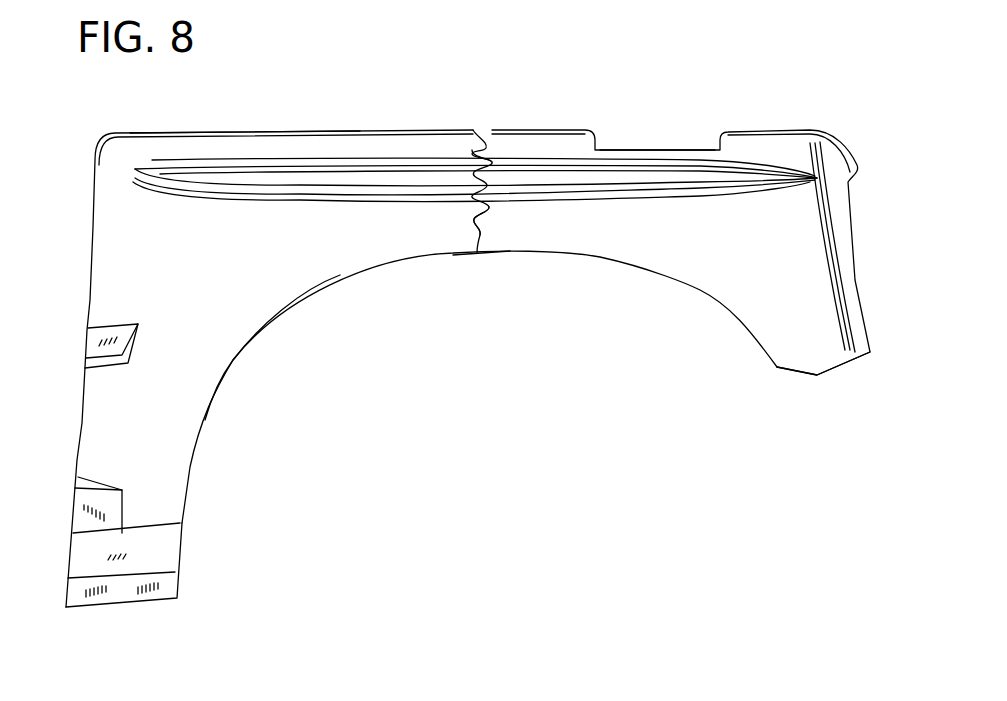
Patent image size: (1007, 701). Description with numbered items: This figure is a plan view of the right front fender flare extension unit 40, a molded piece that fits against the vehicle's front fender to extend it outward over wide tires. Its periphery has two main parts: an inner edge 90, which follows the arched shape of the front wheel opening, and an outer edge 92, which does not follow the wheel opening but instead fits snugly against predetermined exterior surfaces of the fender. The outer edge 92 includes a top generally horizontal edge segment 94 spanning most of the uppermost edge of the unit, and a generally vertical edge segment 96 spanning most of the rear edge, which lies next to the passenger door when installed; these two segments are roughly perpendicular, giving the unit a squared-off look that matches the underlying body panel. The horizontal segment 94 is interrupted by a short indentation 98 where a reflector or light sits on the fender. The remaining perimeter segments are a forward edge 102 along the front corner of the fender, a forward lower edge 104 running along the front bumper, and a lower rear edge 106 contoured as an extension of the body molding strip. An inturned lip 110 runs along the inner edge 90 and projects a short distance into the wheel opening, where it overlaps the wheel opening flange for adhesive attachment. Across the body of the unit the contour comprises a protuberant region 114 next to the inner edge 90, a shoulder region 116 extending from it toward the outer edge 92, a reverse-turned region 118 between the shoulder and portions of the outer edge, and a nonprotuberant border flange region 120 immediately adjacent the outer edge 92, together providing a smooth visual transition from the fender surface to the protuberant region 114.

The right front fender flare extension unit 40 is at (758, 242).
The inner edge 90 is at (233, 360).
The outer edge 92 is at (93, 226).
The top generally horizontal edge segment 94 is at (198, 132).
The generally vertical edge segment 96 is at (80, 425).
The short indentation 98 is at (643, 150).
The forward edge 102 is at (855, 265).
The forward lower edge 104 is at (818, 375).
The lower rear edge 106 is at (120, 595).
The inturned lip 110 is at (455, 255).
The protuberant region 114 is at (497, 227).
The shoulder region 116 is at (495, 190).
The reverse-turned region 118 is at (492, 158).
The nonprotuberant border flange region 120 is at (492, 133).